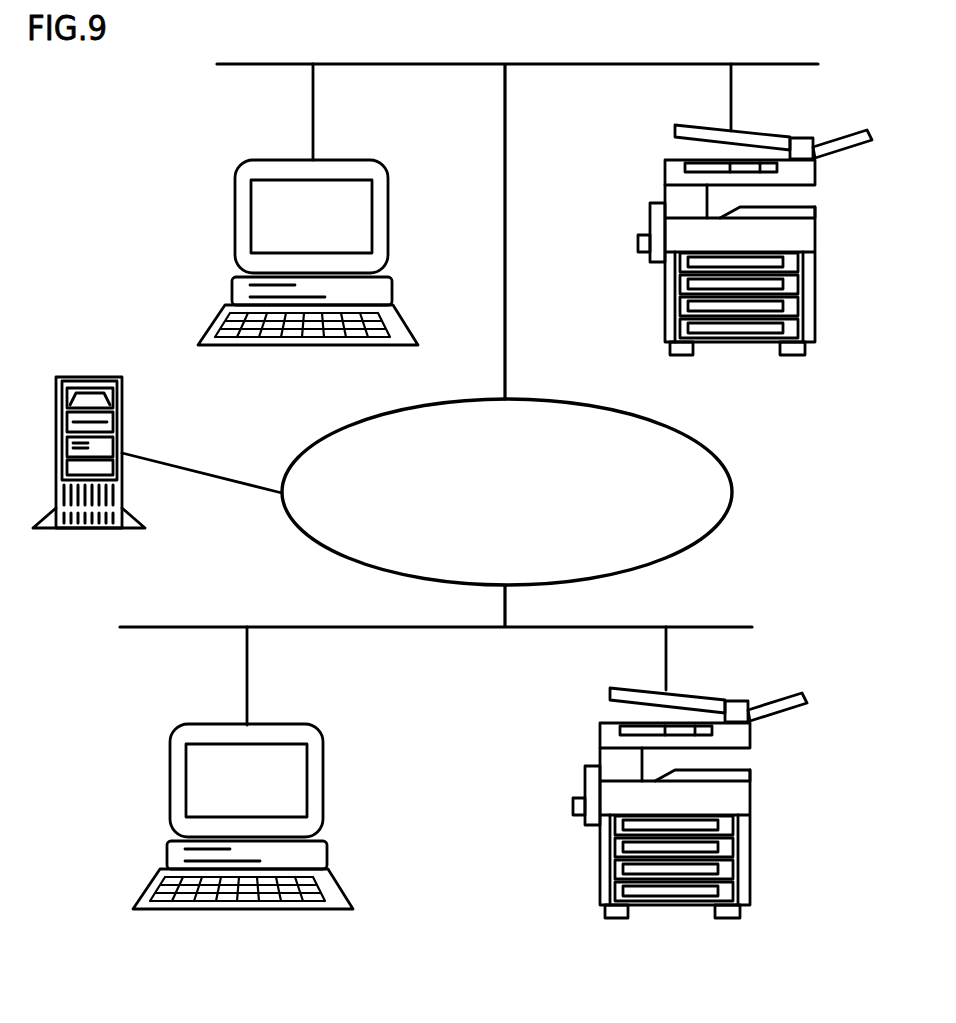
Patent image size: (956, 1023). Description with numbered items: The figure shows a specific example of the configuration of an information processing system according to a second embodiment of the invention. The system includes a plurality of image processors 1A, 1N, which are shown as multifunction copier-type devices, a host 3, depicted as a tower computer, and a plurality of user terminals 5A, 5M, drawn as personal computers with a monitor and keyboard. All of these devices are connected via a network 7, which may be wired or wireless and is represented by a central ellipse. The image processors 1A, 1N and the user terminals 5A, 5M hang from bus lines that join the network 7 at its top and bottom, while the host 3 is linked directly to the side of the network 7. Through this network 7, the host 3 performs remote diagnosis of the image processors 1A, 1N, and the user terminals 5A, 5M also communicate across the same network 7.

The host 3 is at (88, 377).
The user terminal 5A is at (320, 345).
The user terminal 5M is at (252, 908).
The image processor 1A is at (747, 345).
The image processor 1N is at (682, 908).
The network 7 is at (733, 500).